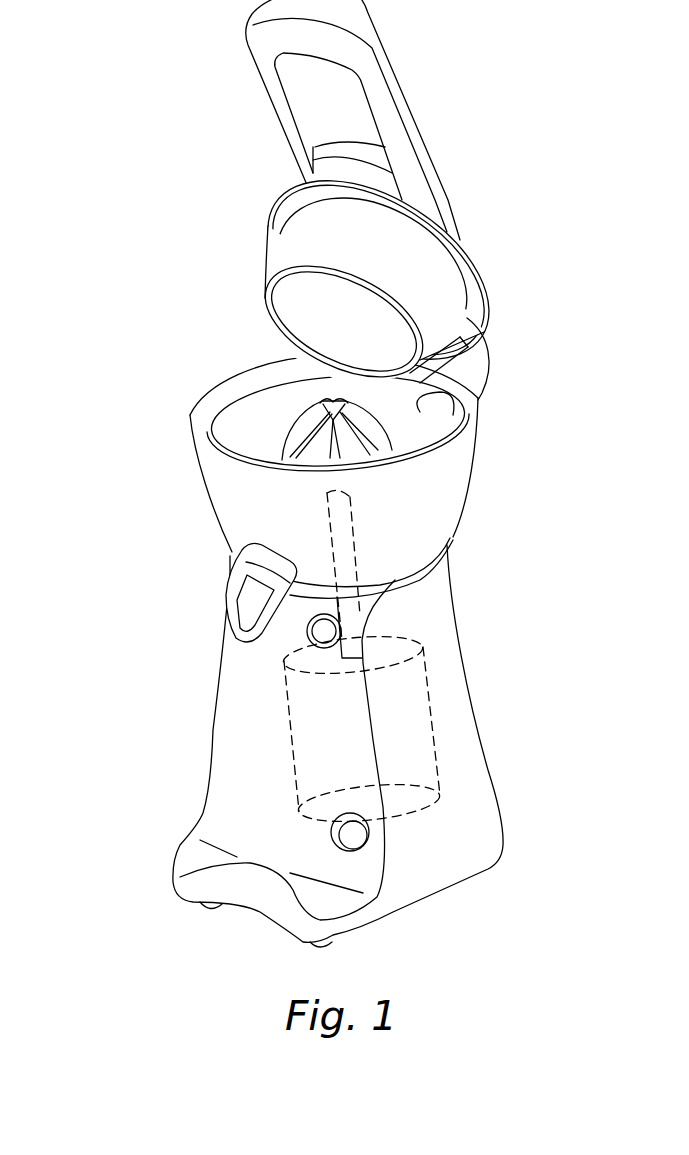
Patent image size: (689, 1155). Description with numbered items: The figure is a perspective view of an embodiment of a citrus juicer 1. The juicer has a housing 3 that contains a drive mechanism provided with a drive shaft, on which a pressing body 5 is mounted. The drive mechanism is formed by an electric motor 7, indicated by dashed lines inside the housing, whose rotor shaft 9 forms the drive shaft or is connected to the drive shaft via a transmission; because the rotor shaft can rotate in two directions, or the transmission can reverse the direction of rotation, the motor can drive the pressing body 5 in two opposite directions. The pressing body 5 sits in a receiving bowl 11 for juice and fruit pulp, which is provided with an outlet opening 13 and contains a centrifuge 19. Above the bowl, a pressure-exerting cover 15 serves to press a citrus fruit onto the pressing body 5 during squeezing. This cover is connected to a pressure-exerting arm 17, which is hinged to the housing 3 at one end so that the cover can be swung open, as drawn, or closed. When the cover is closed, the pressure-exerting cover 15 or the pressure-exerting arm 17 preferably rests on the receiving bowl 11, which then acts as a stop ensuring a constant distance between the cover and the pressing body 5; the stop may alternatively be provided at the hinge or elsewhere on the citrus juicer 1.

The citrus juicer 1 is at (308, 473).
The housing 3 is at (465, 812).
The pressing body 5 is at (292, 422).
The electric motor 7 is at (410, 716).
The rotor shaft 9 is at (347, 547).
The receiving bowl 11 is at (235, 495).
The outlet opening 13 is at (252, 608).
The pressure-exerting cover 15 is at (297, 248).
The pressure-exerting arm 17 is at (398, 108).
The centrifuge 19 is at (478, 400).